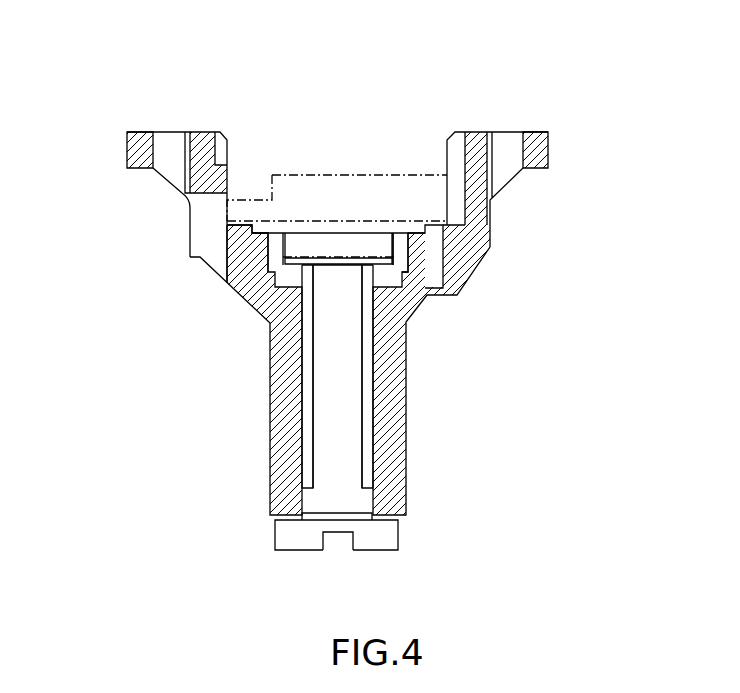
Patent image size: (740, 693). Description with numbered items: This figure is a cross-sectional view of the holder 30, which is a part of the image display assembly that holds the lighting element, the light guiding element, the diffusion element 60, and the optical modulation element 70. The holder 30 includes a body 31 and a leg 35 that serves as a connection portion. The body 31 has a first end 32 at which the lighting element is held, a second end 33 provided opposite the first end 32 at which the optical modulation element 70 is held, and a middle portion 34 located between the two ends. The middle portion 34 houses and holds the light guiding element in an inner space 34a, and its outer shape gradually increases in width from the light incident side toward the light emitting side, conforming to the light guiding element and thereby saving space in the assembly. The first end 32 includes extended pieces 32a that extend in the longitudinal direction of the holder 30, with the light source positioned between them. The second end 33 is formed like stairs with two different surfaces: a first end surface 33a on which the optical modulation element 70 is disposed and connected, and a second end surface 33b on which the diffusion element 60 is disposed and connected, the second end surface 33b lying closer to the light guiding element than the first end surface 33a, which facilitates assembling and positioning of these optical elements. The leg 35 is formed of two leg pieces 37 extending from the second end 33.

The holder 30 is at (352, 97).
The body 31 is at (407, 414).
The first end 32 is at (385, 530).
The extended pieces 32a is at (311, 540).
The second end 33 is at (360, 243).
The first end surface 33a is at (237, 228).
The second end surface 33b is at (387, 248).
The middle portion 34 is at (273, 407).
The inner space 34a is at (336, 364).
The leg 35 is at (552, 170).
The leg pieces 37 is at (128, 149).
The diffusion element 60 is at (318, 243).
The optical modulation element 70 is at (408, 170).